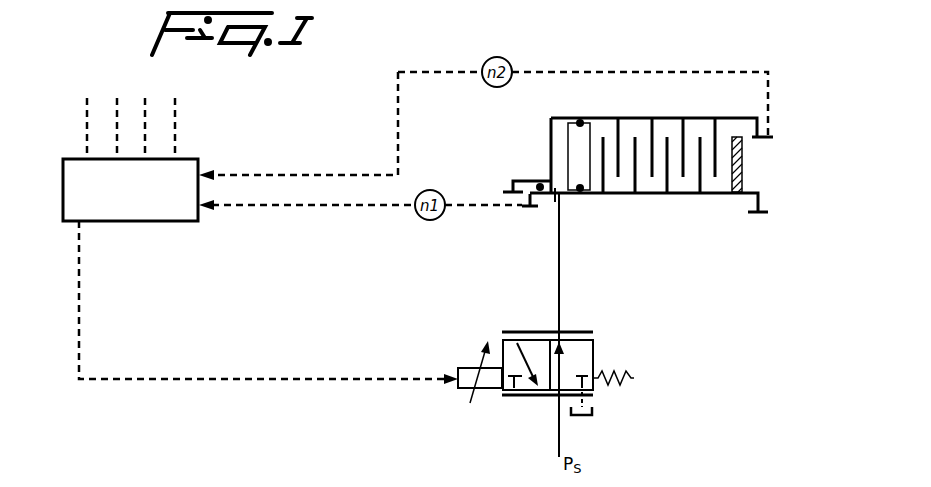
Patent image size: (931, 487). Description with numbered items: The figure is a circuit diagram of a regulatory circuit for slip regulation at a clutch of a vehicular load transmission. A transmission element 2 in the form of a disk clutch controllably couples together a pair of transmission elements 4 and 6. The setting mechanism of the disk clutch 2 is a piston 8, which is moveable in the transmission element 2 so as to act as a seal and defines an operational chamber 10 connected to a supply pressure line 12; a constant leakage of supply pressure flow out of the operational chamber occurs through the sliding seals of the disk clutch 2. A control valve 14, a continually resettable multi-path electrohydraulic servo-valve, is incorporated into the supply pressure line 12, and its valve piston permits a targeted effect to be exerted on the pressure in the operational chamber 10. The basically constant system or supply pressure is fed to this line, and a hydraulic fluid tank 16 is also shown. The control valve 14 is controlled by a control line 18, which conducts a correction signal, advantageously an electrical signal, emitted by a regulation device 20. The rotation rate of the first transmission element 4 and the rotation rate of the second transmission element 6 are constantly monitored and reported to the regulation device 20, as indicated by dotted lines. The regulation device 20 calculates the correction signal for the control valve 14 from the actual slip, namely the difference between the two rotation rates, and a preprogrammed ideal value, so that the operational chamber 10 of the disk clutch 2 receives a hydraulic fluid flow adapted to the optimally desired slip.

The transmission element 2 is at (660, 162).
The first transmission element 4 is at (693, 193).
The second transmission element 6 is at (743, 118).
The setting mechanism 8 is at (588, 143).
The operational chamber 10 is at (558, 148).
The supply pressure line 12 is at (559, 267).
The control valve 14 is at (612, 341).
The hydraulic fluid tank 16 is at (578, 419).
The control line 18 is at (190, 380).
The regulation device 20 is at (63, 195).